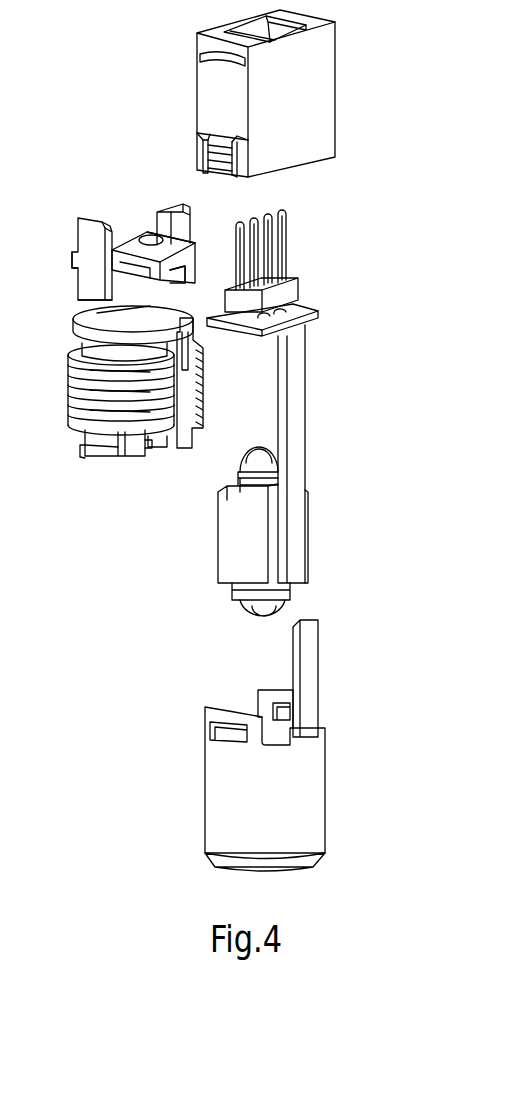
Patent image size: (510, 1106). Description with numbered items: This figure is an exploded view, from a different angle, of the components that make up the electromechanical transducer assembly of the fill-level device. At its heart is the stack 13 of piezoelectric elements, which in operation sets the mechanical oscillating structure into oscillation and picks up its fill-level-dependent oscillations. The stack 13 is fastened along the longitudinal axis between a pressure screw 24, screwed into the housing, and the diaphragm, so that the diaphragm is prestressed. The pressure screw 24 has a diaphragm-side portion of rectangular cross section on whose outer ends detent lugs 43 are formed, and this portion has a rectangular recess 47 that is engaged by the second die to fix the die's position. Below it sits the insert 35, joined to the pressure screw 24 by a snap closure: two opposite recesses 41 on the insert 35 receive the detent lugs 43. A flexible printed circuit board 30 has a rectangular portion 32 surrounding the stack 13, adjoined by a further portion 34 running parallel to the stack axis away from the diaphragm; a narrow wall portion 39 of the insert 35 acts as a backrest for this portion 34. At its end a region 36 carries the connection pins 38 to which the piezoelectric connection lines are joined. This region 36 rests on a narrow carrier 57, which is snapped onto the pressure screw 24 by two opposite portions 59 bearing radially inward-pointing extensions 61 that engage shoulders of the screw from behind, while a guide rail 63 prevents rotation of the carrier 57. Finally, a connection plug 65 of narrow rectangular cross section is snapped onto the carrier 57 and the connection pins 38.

The stack 13 is at (210, 484).
The pressure screw 24 is at (76, 389).
The flexible printed circuit board 30 is at (298, 485).
The rectangular portion 32 is at (233, 566).
The further portion 34 is at (300, 392).
The insert 35 is at (217, 778).
The region 36 is at (312, 312).
The connection pins 38 is at (283, 231).
The narrow wall portion 39 is at (308, 660).
The recesses 41 is at (226, 728).
The detent lugs 43 is at (90, 450).
The recess 47 is at (150, 450).
The carrier 57 is at (90, 235).
The portions 59 is at (85, 292).
The extensions 61 is at (98, 302).
The guide rail 63 is at (150, 275).
The connection plug 65 is at (320, 104).